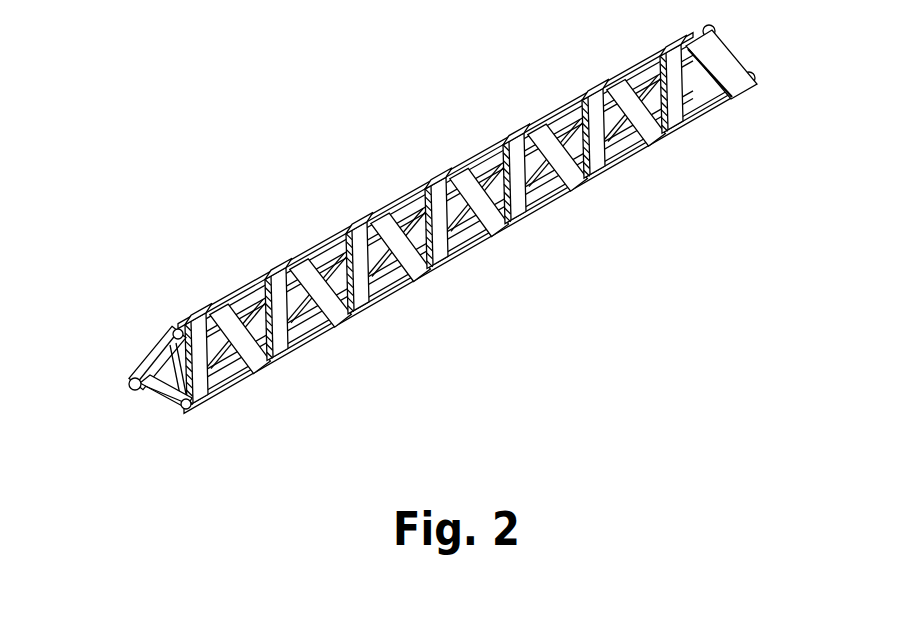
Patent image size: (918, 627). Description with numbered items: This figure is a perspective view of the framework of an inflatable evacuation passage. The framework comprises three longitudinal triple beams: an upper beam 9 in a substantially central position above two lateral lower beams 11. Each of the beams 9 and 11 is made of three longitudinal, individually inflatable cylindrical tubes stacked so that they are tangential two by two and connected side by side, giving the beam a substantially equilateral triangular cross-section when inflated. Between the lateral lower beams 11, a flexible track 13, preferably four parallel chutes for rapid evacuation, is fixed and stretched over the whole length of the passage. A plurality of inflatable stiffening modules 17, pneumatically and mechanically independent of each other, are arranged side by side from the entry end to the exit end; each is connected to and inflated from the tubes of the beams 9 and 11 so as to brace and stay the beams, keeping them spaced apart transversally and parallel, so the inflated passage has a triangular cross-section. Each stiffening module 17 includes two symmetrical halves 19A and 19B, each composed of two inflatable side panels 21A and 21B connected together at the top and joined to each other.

The upper beam 9 is at (177, 328).
The lateral lower beams 11 is at (128, 386).
The flexible track 13 is at (160, 394).
The stiffening module 17 is at (456, 150).
The first half of stiffening module 19A is at (400, 310).
The second half of stiffening module 19B is at (447, 283).
The inflatable side panel 21A is at (348, 232).
The inflatable side panel 21B is at (428, 269).